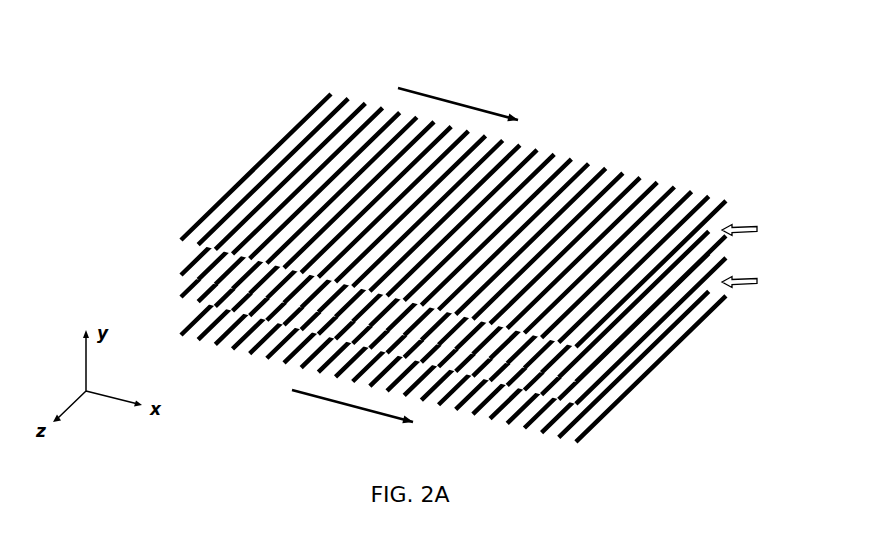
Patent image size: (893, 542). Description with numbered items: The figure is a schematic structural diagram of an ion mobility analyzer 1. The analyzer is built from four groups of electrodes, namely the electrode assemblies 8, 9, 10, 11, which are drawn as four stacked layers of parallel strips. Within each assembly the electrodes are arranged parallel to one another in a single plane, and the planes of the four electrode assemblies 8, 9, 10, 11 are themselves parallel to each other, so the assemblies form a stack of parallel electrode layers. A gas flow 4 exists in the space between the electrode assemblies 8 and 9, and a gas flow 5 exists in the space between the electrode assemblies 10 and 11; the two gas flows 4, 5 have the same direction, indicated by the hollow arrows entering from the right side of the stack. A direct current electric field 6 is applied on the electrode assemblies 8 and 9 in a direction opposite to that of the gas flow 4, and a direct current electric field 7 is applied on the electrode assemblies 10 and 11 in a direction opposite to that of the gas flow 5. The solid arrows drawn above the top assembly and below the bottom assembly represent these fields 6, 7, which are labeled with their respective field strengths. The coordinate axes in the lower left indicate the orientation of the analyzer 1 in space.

The ion mobility analyzer 1 is at (435, 225).
The gas flow 4 is at (753, 237).
The gas flow 5 is at (753, 289).
The direct current electric field 6 is at (458, 97).
The direct current electric field 7 is at (352, 410).
The electrode assembly 8 is at (439, 220).
The electrode assembly 9 is at (439, 255).
The electrode assembly 10 is at (435, 277).
The electrode assembly 11 is at (435, 315).